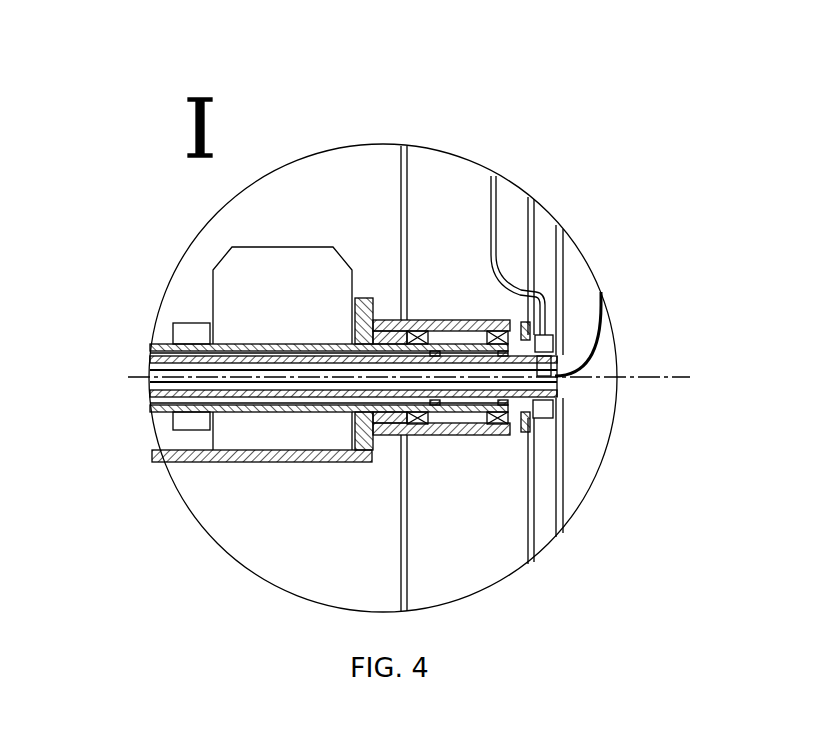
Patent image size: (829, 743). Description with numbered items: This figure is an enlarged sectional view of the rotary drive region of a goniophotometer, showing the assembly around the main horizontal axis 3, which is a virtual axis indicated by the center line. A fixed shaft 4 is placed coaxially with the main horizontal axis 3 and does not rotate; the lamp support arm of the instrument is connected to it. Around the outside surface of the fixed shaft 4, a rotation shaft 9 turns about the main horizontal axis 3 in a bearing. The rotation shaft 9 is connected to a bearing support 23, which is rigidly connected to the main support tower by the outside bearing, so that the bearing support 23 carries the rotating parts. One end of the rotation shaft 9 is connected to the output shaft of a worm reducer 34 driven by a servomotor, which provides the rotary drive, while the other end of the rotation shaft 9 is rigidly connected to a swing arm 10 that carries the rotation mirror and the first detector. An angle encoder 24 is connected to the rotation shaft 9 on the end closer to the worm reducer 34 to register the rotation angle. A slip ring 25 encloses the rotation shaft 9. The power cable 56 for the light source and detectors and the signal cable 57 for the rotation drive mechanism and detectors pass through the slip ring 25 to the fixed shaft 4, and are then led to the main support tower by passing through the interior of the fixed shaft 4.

The main horizontal axis 3 is at (120, 377).
The fixed shaft 4 is at (520, 413).
The rotation shaft 9 is at (527, 333).
The swing arm 10 is at (530, 240).
The bearing support 23 is at (480, 435).
The angle encoder 24 is at (172, 323).
The slip ring 25 is at (553, 338).
The worm reducer 34 is at (288, 247).
The power cable 56 is at (588, 360).
The signal cable 57 is at (493, 240).